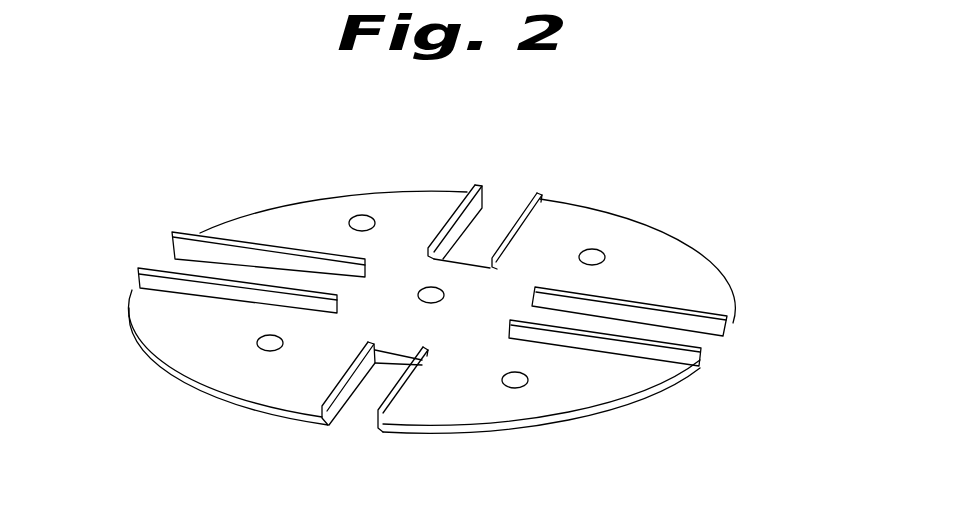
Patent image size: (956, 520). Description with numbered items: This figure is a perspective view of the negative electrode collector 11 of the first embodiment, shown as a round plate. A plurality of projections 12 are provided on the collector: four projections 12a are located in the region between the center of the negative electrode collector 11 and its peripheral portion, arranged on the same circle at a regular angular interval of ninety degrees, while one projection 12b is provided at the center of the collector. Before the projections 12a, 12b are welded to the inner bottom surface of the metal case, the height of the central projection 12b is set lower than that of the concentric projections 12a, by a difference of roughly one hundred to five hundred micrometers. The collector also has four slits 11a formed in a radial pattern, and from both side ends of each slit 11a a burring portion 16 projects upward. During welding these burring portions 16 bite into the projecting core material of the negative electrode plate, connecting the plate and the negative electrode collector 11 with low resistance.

The negative electrode collector 11 is at (613, 397).
The slits 11a is at (177, 267).
The projections 12 is at (431, 283).
The projections 12a is at (520, 388).
The central projection 12b is at (428, 291).
The burring portion 16 is at (635, 310).